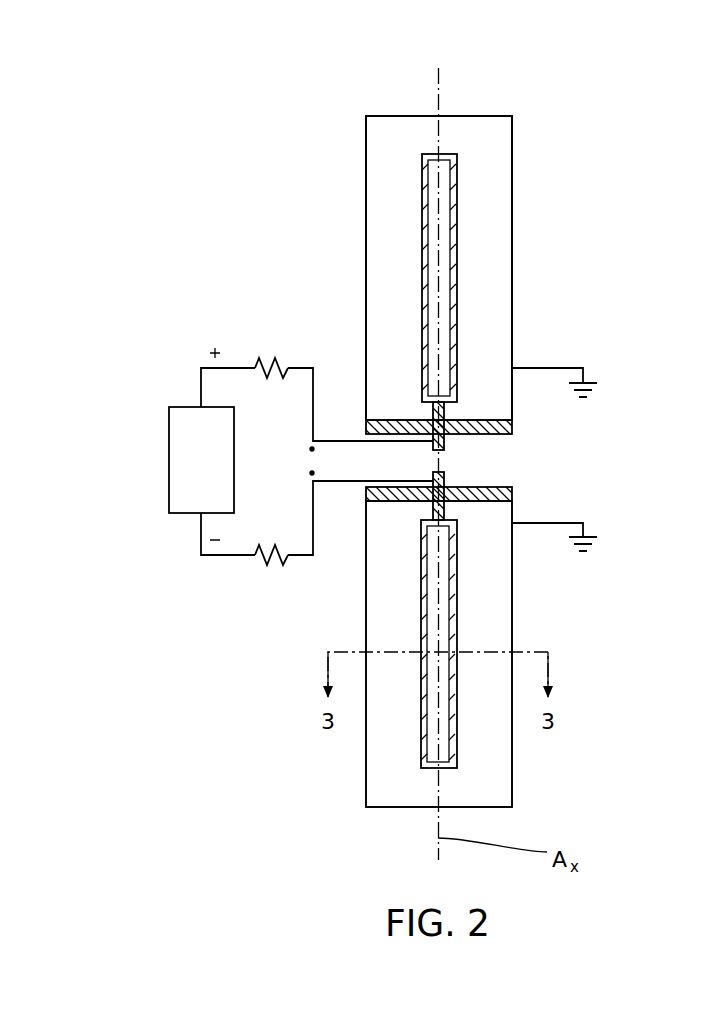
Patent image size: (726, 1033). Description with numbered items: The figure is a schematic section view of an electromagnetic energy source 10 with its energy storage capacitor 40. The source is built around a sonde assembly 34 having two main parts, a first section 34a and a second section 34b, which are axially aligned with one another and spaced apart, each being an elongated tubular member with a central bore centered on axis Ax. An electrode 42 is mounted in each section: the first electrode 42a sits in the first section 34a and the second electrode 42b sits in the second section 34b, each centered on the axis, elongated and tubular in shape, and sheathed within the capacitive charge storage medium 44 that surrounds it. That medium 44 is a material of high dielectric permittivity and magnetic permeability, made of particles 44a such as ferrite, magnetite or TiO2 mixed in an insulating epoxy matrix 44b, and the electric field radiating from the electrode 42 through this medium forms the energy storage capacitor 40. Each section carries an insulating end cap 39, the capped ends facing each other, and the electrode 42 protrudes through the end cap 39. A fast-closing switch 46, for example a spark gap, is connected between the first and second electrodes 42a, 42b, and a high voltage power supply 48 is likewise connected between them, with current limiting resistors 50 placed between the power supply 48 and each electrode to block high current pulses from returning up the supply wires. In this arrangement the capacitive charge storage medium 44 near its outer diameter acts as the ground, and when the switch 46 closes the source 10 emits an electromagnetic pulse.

The electromagnetic energy source 10 is at (383, 446).
The sonde assembly 34 is at (477, 420).
The first section 34a is at (475, 637).
The second section 34b is at (499, 259).
The end cap 39 is at (512, 427).
The energy storage capacitor 40 is at (258, 499).
The electrode 42 is at (446, 154).
The first electrode 42a is at (457, 740).
The second electrode 42b is at (456, 182).
The capacitive charge storage medium 44 is at (395, 748).
The particles 44a is at (478, 332).
The epoxy matrix 44b is at (468, 287).
The fast-closing switch 46 is at (312, 463).
The high voltage power supply 48 is at (169, 436).
The current limiting resistors 50 is at (267, 562).